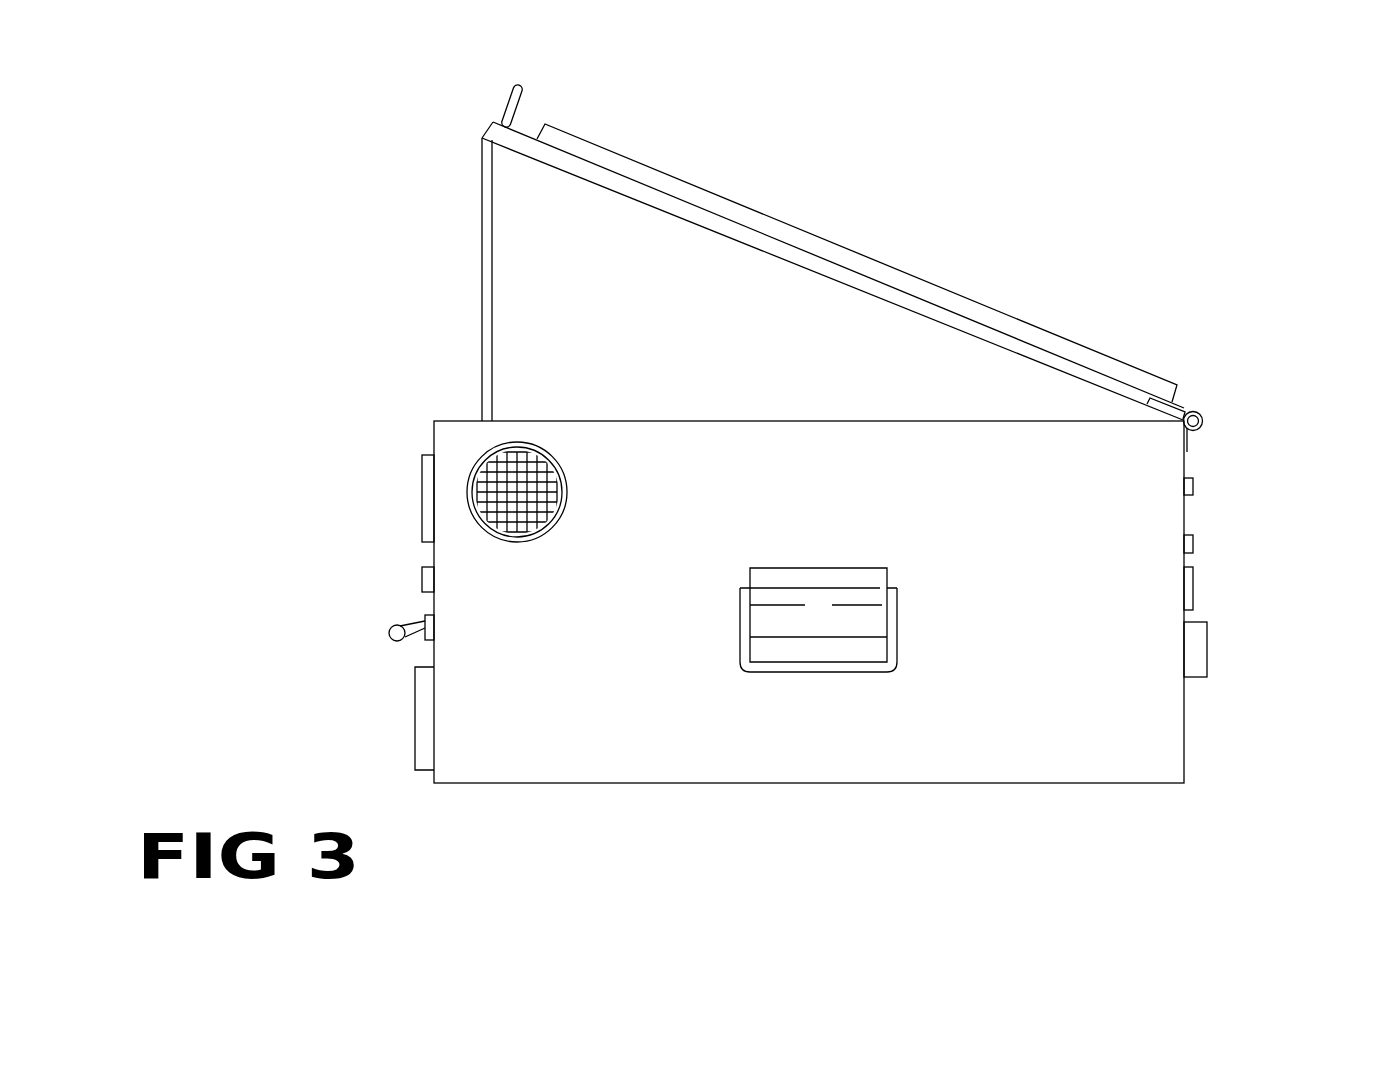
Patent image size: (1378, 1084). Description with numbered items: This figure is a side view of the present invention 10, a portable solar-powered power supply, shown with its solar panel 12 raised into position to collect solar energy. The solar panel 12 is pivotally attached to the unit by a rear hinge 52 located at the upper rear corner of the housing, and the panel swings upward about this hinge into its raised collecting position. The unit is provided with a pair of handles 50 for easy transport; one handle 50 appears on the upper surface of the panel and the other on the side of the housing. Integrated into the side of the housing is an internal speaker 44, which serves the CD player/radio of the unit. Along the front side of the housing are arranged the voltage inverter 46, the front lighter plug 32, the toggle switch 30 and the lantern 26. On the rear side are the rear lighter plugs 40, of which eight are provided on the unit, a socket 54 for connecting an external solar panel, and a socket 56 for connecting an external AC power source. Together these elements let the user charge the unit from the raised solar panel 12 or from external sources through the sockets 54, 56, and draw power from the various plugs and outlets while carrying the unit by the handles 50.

The present invention 10 is at (1232, 795).
The solar panel 12 is at (778, 220).
The lantern 26 is at (415, 710).
The toggle switch 30 is at (388, 642).
The front lighter plug 32 is at (423, 573).
The rear lighter plugs 40 is at (1193, 483).
The internal speaker 44 is at (532, 540).
The voltage inverter 46 is at (423, 498).
The carrying handle 50 is at (510, 103).
The rear hinge 52 is at (1200, 413).
The socket for an external solar panel 54 is at (1193, 583).
The socket for external AC power source 56 is at (1207, 645).